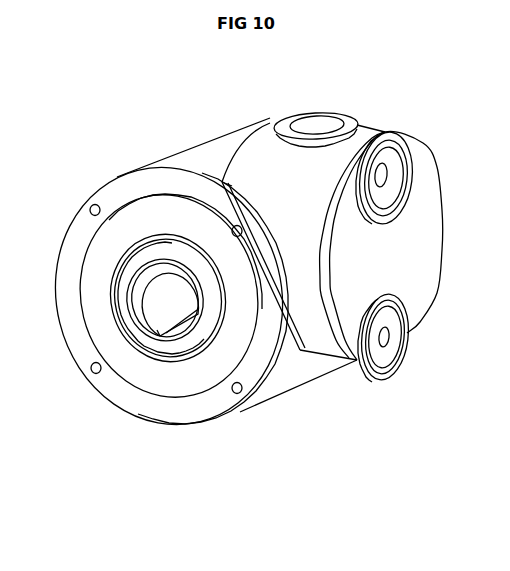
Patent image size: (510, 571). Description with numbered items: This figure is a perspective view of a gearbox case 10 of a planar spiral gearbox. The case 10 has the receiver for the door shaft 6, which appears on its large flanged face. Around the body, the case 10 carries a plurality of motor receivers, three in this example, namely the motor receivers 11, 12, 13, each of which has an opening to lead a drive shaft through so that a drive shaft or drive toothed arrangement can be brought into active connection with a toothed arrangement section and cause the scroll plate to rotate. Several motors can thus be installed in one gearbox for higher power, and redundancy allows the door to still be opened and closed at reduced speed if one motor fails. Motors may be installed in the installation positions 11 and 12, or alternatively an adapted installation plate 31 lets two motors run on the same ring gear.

The door shaft 6 is at (158, 313).
The gearbox case 10 is at (290, 390).
The motor receiver 11 is at (398, 378).
The motor receiver 12 is at (390, 130).
The motor receiver 13 is at (333, 112).
The installation plate 31 is at (420, 292).